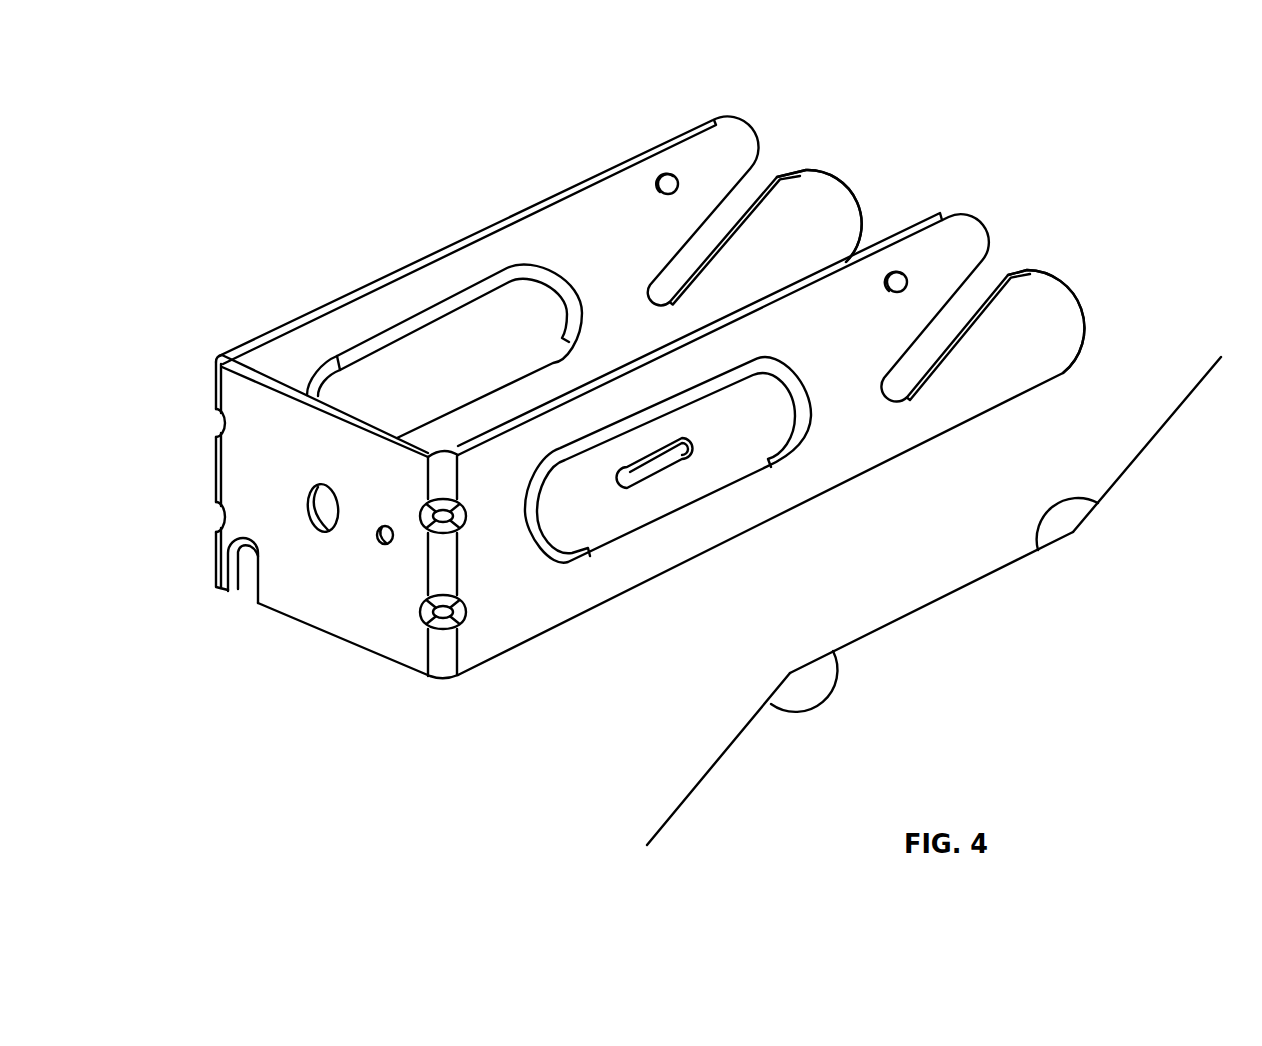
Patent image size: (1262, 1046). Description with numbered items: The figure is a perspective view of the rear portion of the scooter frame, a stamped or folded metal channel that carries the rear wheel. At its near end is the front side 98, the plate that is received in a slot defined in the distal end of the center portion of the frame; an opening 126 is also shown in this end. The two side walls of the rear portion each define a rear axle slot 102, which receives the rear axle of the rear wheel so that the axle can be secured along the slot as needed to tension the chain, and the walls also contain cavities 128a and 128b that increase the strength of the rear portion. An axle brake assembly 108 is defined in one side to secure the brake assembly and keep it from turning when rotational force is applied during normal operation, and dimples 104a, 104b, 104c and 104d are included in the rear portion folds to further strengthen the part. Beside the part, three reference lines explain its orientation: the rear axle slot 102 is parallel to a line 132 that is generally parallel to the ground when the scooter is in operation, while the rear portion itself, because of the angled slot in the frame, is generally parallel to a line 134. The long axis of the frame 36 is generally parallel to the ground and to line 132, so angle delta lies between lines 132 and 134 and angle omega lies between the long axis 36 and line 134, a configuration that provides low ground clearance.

The rear axle slot 102 is at (775, 158).
The front side 98 is at (313, 610).
The dimple 104a is at (218, 421).
The dimple 104b is at (218, 517).
The dimple 104c is at (438, 537).
The dimple 104d is at (438, 628).
The slot 126 is at (235, 605).
The cavity 128a is at (491, 312).
The cavity 128b is at (561, 533).
The axle brake assembly 108 is at (684, 445).
The line 132 is at (1157, 442).
The line 134 is at (957, 596).
The long axis of the frame 36 is at (716, 771).